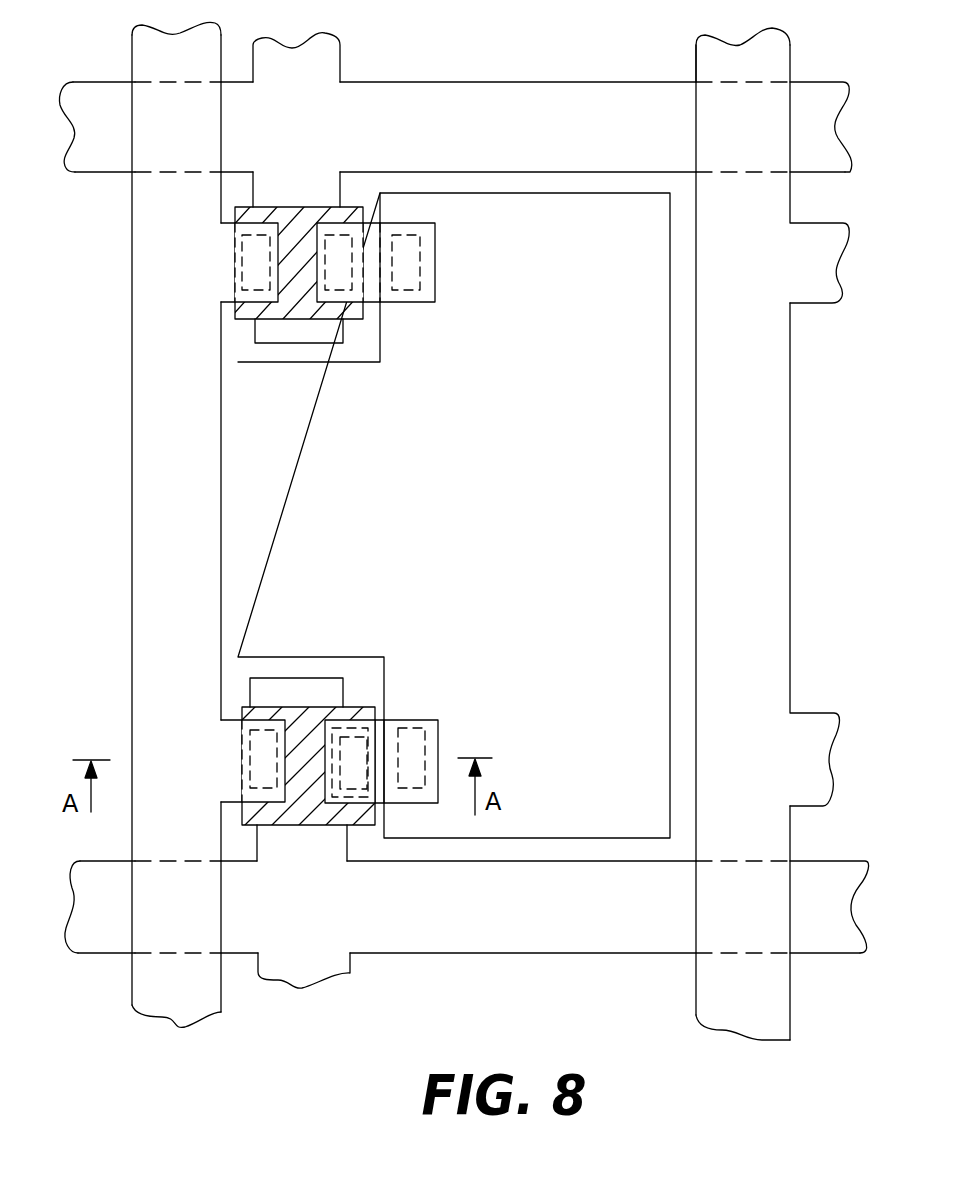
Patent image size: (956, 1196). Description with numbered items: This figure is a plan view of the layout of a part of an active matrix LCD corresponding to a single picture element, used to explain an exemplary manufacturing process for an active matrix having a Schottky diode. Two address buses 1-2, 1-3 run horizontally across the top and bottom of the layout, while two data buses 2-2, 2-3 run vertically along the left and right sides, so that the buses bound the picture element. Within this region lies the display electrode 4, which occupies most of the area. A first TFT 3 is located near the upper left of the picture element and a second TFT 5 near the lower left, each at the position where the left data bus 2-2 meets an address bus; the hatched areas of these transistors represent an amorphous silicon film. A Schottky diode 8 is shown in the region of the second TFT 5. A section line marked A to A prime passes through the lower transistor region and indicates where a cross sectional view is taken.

The address bus 1-2 is at (413, 108).
The address bus 1-3 is at (582, 933).
The data bus 2-2 is at (207, 495).
The data bus 2-3 is at (751, 427).
The first TFT 3 is at (296, 222).
The display electrode 4 is at (598, 495).
The second TFT 5 is at (304, 831).
The Schottky diode 8 is at (353, 757).